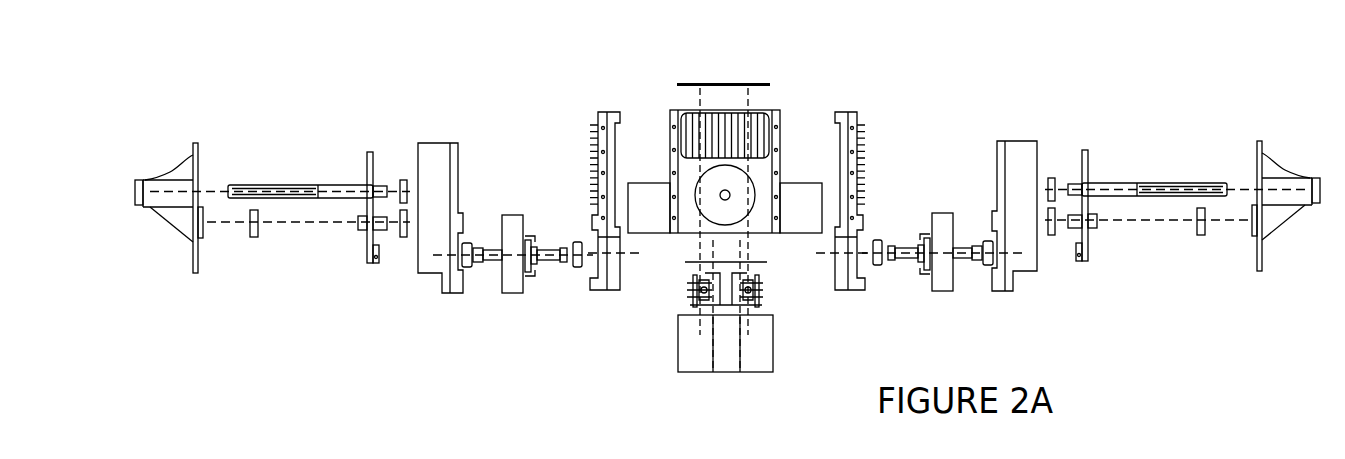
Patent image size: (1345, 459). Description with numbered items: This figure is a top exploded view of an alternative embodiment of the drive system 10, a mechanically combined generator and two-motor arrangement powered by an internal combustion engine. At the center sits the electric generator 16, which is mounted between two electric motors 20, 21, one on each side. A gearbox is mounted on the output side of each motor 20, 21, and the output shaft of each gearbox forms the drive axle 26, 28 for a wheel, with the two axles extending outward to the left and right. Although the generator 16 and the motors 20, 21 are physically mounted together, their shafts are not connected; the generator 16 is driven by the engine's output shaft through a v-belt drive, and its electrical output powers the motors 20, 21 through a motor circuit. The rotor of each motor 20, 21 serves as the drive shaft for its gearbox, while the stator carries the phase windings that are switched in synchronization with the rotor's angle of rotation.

The drive system 10 is at (551, 95).
The electric generator 16 is at (752, 176).
The electric motor 20 is at (513, 205).
The electric motor 21 is at (940, 205).
The drive axle 26 is at (278, 184).
The drive axle 28 is at (1197, 182).